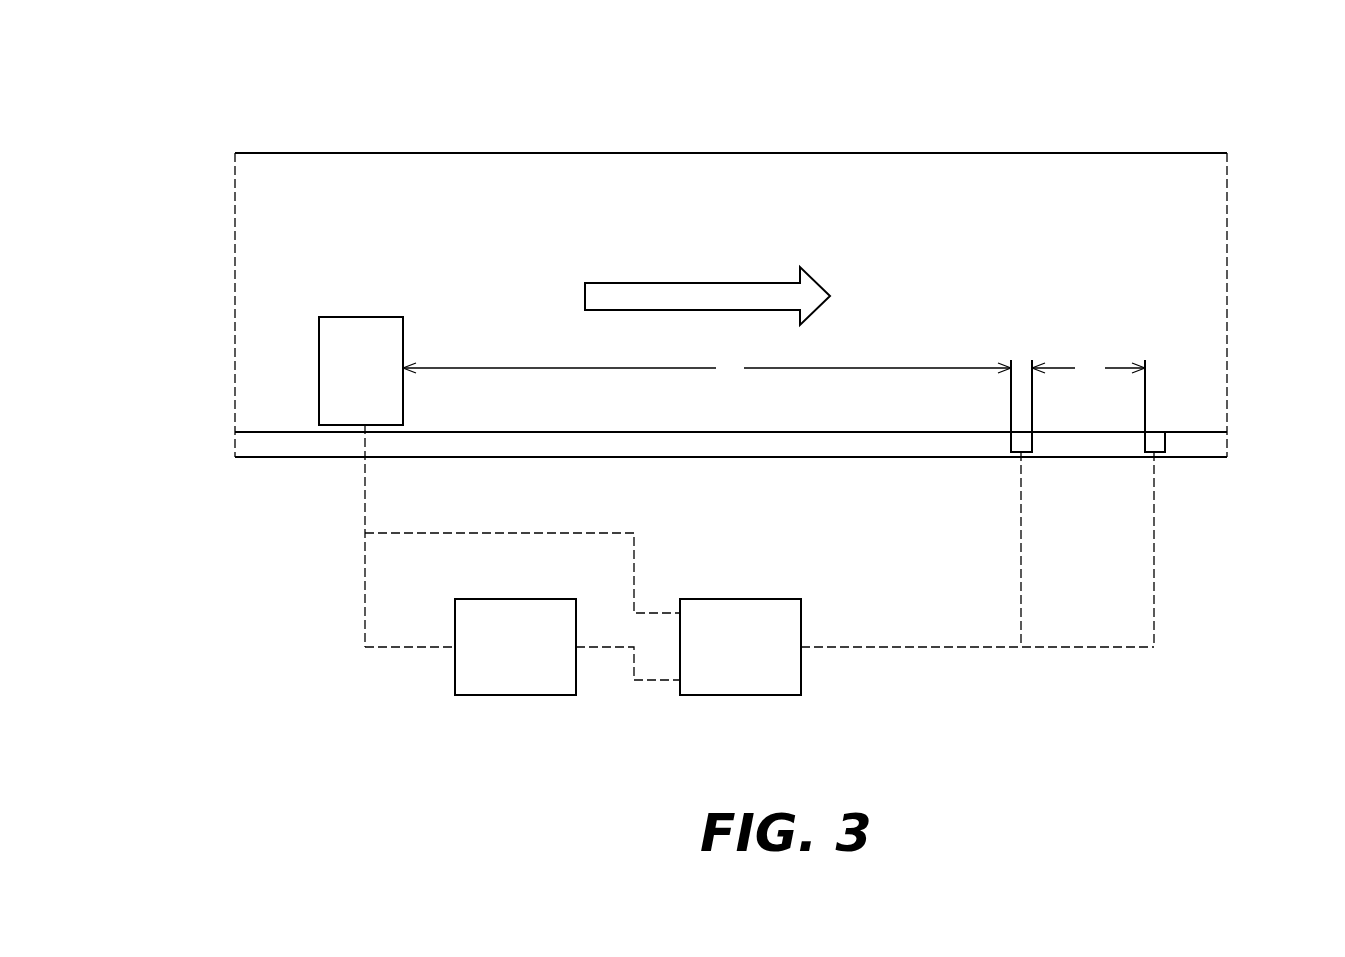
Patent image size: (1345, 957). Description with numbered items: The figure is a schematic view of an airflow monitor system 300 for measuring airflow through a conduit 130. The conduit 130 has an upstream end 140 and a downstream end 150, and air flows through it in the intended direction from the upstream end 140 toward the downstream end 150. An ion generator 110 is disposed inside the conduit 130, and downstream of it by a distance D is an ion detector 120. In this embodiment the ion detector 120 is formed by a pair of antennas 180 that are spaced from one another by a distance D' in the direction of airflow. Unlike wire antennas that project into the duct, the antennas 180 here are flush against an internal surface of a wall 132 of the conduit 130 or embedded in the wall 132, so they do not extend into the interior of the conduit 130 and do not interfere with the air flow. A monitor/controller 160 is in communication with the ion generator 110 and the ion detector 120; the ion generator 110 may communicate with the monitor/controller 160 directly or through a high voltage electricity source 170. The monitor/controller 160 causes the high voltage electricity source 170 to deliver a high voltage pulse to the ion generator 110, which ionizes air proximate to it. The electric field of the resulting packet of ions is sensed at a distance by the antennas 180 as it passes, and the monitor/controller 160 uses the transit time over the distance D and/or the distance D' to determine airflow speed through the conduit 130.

The system for measuring airflow 300 is at (597, 128).
The ion generator 110 is at (355, 317).
The ion detector 120 is at (1165, 340).
The conduit 130 is at (910, 151).
The wall 132 is at (1200, 432).
The upstream end 140 is at (235, 222).
The downstream end 150 is at (1228, 215).
The monitor/controller 160 is at (738, 695).
The high voltage electricity source 170 is at (510, 695).
The antennas 180 is at (1010, 442).